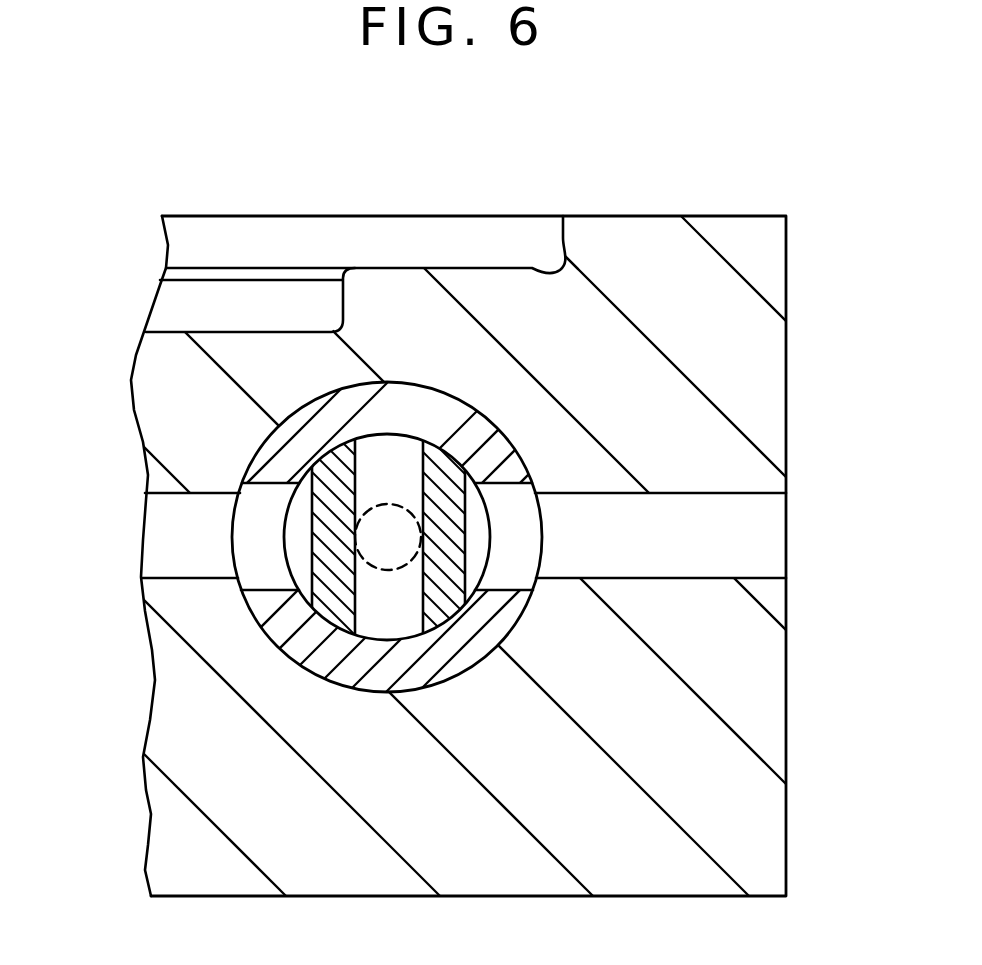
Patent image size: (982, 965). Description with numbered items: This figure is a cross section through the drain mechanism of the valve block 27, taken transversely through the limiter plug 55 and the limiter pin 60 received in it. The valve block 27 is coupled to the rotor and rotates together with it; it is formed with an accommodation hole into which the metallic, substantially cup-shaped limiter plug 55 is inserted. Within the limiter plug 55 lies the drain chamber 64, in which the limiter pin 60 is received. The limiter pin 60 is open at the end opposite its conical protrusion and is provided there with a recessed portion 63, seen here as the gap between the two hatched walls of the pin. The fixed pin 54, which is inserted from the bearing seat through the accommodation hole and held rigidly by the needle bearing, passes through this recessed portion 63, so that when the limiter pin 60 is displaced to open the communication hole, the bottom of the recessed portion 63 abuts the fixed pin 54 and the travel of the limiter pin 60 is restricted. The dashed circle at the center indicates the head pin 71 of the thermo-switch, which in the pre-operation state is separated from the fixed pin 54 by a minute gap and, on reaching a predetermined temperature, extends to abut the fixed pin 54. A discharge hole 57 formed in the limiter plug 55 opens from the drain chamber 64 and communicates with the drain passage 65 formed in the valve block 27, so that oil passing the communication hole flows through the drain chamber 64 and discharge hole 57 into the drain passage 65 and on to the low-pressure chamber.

The valve block 27 is at (653, 858).
The fixed pin 54 is at (373, 460).
The limiter plug 55 is at (297, 650).
The discharge hole 57 is at (186, 504).
The limiter pin 60 is at (590, 409).
The recessed portion 63 is at (423, 443).
The drain chamber 64 is at (262, 565).
The drain passage 65 is at (720, 578).
The head pin 71 is at (390, 570).